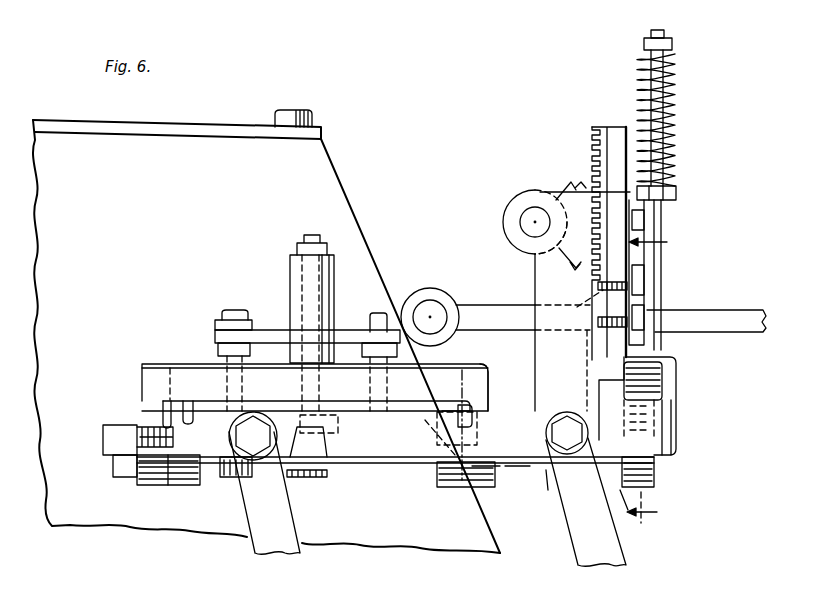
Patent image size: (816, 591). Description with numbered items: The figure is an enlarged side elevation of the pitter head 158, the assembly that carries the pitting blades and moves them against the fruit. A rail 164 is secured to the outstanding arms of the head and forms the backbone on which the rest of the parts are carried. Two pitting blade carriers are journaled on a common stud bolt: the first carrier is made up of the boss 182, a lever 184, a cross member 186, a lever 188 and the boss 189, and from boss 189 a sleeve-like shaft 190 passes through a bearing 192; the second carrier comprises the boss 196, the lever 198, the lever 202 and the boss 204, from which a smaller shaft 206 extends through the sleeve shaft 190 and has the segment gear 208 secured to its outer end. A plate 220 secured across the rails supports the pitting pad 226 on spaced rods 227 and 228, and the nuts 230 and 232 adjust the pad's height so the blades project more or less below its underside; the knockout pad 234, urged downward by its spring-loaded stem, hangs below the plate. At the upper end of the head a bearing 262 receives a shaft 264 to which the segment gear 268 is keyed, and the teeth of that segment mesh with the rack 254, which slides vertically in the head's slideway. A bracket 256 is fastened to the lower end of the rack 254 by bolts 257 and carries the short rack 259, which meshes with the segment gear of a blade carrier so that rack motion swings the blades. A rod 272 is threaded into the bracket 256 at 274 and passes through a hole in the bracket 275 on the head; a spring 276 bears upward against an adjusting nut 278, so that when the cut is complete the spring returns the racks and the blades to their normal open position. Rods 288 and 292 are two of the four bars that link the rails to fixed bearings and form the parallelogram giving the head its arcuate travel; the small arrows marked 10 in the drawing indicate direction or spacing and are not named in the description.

The direction / spacing arrow 10 is at (657, 380).
The pitter head 158 is at (541, 291).
The rail 164 is at (420, 453).
The boss 182 is at (141, 487).
The lever 184 is at (77, 389).
The cross member 186 is at (157, 362).
The lever 188 is at (490, 410).
The boss 189 is at (472, 468).
The sleeve-like shaft 190 is at (560, 478).
The bearing 192 is at (505, 582).
The boss 196 is at (185, 487).
The lever 198 is at (212, 398).
The lever 202 is at (447, 412).
The boss 204 is at (452, 487).
The shaft 206 is at (548, 425).
The segment gear 208 is at (654, 477).
The plate 220 is at (268, 328).
The pitting pad 226 is at (372, 477).
The rod 227 is at (245, 381).
The rod 228 is at (387, 390).
The nut 230 is at (222, 318).
The nut 232 is at (217, 349).
The knockout pad 234 is at (319, 483).
The rack 254 is at (594, 145).
The bracket 256 is at (674, 362).
The bolt 257 is at (598, 322).
The short rack 259 is at (626, 508).
The bearing 262 is at (520, 225).
The shaft 264 is at (540, 212).
The segment gear 268 is at (540, 260).
The rod 272 is at (658, 282).
The threaded connection 274 is at (658, 350).
The bracket 275 is at (677, 197).
The spring 276 is at (672, 112).
The adjusting nut 278 is at (672, 43).
The rod 288 is at (259, 550).
The rod 292 is at (614, 553).